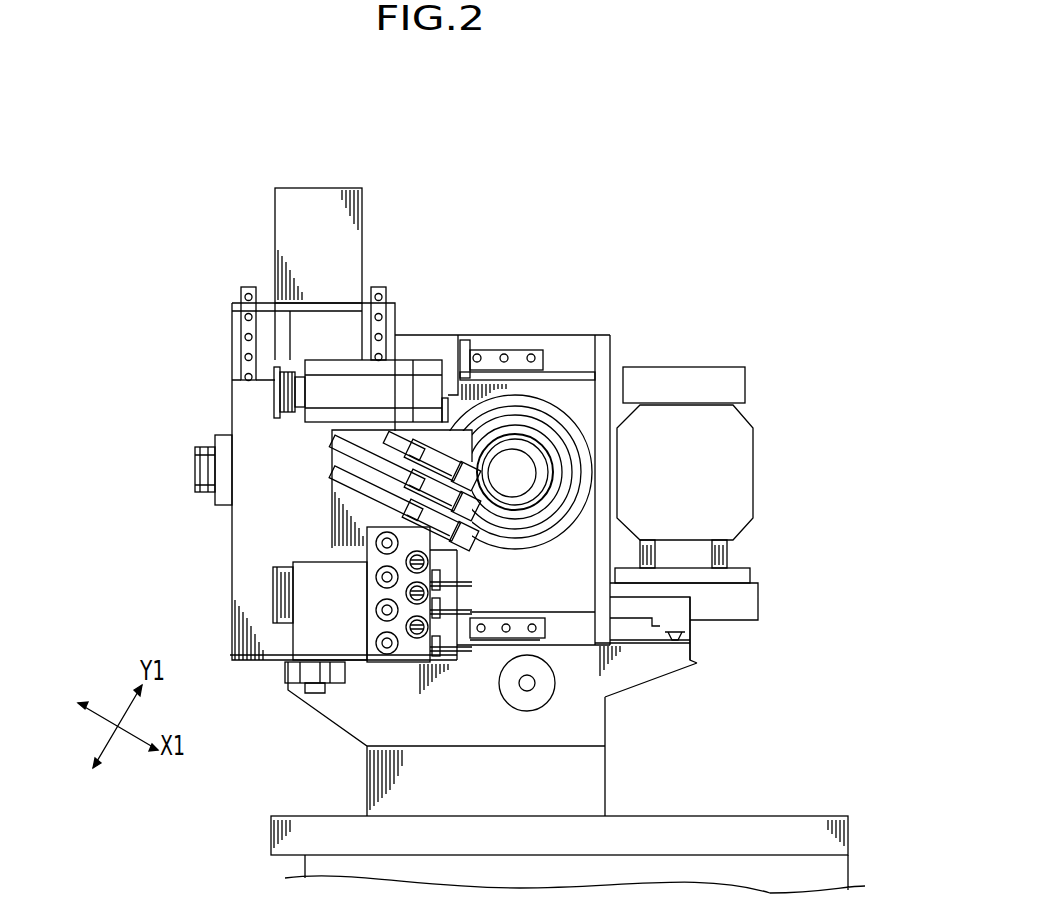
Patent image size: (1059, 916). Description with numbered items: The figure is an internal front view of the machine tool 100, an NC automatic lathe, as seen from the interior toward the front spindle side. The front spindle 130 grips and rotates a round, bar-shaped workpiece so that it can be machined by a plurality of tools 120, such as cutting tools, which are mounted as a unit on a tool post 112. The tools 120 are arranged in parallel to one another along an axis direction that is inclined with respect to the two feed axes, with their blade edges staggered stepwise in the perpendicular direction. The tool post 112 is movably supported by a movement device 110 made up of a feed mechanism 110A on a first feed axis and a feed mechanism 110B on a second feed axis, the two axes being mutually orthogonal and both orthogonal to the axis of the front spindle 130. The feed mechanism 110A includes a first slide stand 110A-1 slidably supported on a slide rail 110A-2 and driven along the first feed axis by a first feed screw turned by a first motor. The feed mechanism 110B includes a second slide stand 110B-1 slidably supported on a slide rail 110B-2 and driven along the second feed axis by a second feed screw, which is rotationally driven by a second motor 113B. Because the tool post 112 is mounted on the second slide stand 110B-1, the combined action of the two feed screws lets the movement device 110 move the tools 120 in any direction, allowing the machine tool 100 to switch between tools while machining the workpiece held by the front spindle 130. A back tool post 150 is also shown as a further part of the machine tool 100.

The machine tool 100 is at (712, 176).
The movement device 110 is at (390, 208).
The feed mechanism on the first feed axis A 110A is at (500, 262).
The first slide stand 110A-1 is at (430, 342).
The slide rail 110A-2 is at (488, 352).
The feed mechanism on the second feed axis B 110B is at (170, 338).
The second slide stand 110B-1 is at (243, 410).
The slide rail 110B-2 is at (378, 287).
The tool post 112 is at (340, 485).
The second motor 113B is at (296, 197).
The tools 120 is at (495, 515).
The front spindle 130 is at (543, 468).
The back tool post 150 is at (405, 643).